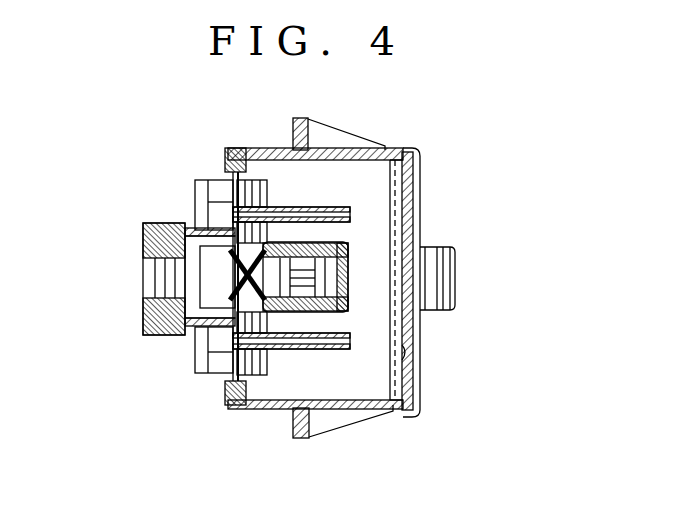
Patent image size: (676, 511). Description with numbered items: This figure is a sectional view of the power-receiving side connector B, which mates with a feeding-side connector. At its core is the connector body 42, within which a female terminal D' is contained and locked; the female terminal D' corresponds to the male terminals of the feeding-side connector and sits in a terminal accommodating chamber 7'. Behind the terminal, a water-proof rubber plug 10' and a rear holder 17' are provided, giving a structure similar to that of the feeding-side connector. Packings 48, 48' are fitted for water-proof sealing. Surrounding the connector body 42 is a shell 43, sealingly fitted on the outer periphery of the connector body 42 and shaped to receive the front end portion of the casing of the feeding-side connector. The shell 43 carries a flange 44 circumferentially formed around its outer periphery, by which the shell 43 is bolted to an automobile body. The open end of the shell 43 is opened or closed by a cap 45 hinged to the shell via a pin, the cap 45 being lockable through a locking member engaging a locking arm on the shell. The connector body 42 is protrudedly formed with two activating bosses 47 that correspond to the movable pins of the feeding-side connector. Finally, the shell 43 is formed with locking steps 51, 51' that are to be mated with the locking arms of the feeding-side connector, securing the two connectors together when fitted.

The receiving-side connector B is at (212, 120).
The locking step 51 is at (339, 114).
The locking step 51' is at (354, 449).
The activating boss 47 is at (328, 208).
The terminal accommodating chamber 7' is at (325, 233).
The cap 45 is at (395, 202).
The female terminal D' is at (325, 280).
The rear holder 17' is at (125, 229).
The water-proof rubber plug 10' is at (154, 284).
The packing 48' is at (191, 278).
The packing 48 is at (215, 371).
The connector body 42 is at (247, 405).
The shell 43 is at (275, 408).
The flange 44 is at (300, 440).